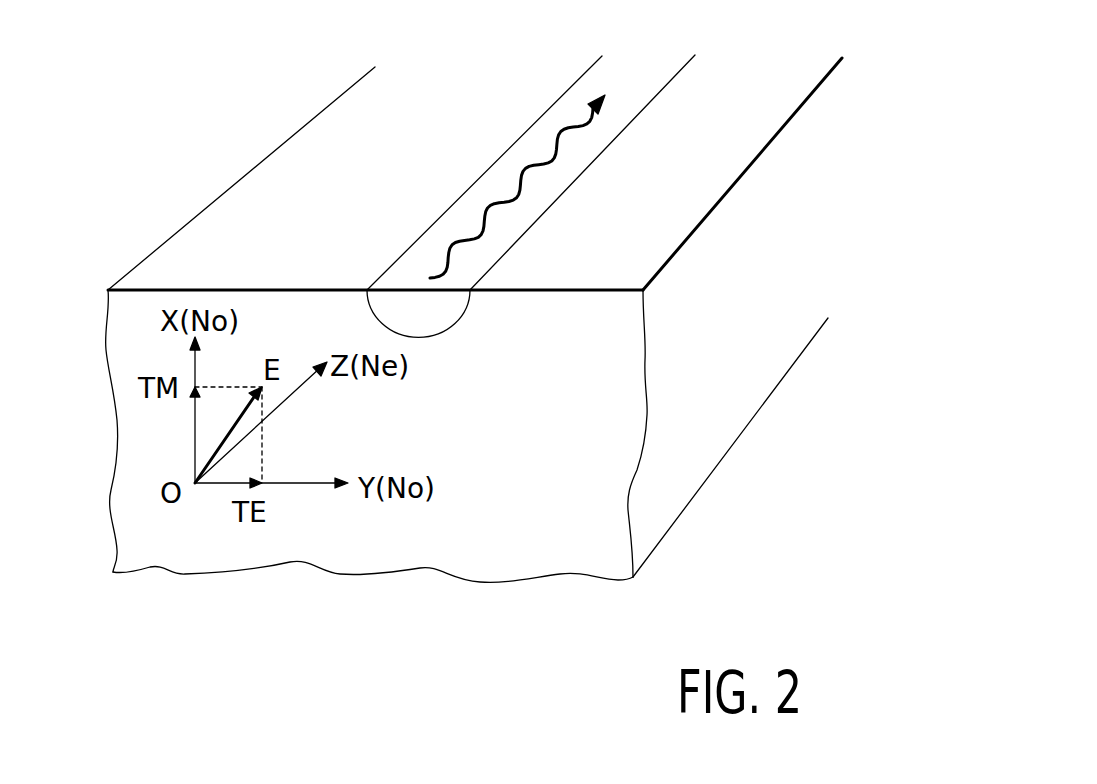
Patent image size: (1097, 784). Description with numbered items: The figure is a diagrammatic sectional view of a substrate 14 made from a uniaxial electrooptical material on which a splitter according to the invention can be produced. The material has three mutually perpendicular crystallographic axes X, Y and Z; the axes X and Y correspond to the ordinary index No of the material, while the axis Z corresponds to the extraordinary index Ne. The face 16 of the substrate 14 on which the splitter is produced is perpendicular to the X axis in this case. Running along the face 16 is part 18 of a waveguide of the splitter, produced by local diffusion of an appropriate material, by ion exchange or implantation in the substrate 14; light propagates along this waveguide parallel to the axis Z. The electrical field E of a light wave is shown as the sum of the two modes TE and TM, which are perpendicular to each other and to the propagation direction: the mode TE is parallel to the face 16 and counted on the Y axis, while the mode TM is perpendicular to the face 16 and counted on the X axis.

The substrate 14 is at (474, 320).
The face of the substrate 16 is at (268, 197).
The part of a waveguide 18 is at (547, 125).